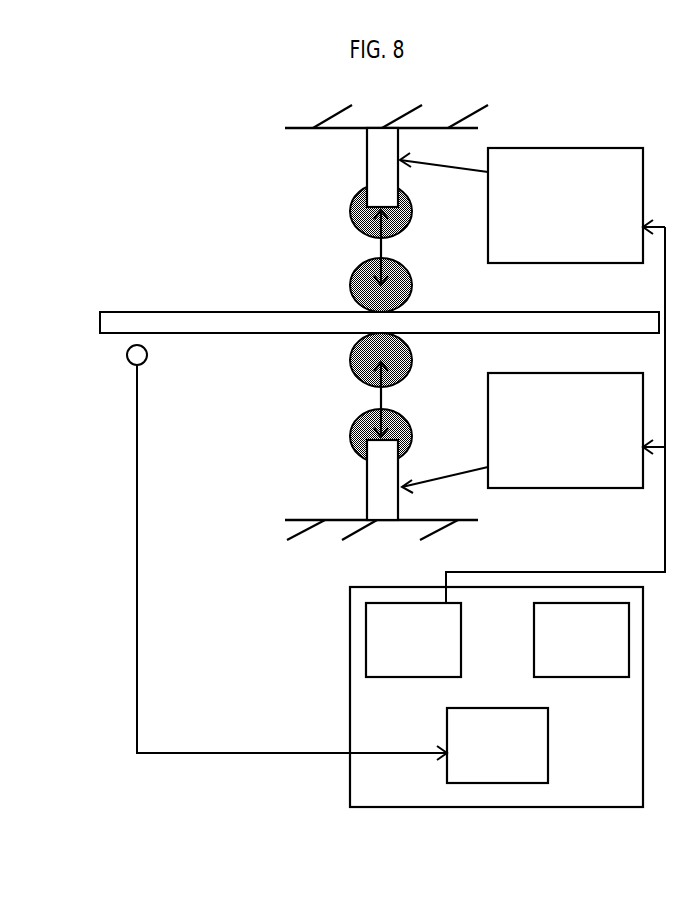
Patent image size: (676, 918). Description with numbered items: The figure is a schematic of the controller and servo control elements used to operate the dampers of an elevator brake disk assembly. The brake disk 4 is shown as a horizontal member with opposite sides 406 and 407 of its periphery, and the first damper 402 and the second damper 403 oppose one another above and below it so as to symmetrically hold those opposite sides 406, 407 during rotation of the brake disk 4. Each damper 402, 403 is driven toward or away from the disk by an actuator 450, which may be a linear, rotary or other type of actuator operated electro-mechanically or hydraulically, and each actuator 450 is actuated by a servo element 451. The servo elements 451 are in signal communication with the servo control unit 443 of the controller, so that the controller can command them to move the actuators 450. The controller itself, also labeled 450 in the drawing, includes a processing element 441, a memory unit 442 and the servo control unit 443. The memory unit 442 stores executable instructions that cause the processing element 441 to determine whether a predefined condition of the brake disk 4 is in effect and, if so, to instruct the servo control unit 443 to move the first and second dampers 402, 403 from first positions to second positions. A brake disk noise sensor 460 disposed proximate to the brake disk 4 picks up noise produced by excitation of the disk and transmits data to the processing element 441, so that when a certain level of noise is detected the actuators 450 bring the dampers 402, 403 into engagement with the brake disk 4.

The brake disk 4 is at (202, 318).
The opposite side of periphery 406 is at (143, 312).
The opposite side of periphery 407 is at (193, 333).
The first damper 402 is at (357, 277).
The second damper 403 is at (357, 367).
The actuator 450 is at (373, 172).
The servo element 451 is at (532, 375).
The brake disk noise sensor 460 is at (127, 355).
The processing element 441 is at (497, 745).
The memory unit 442 is at (581, 640).
The servo control unit 443 is at (413, 640).